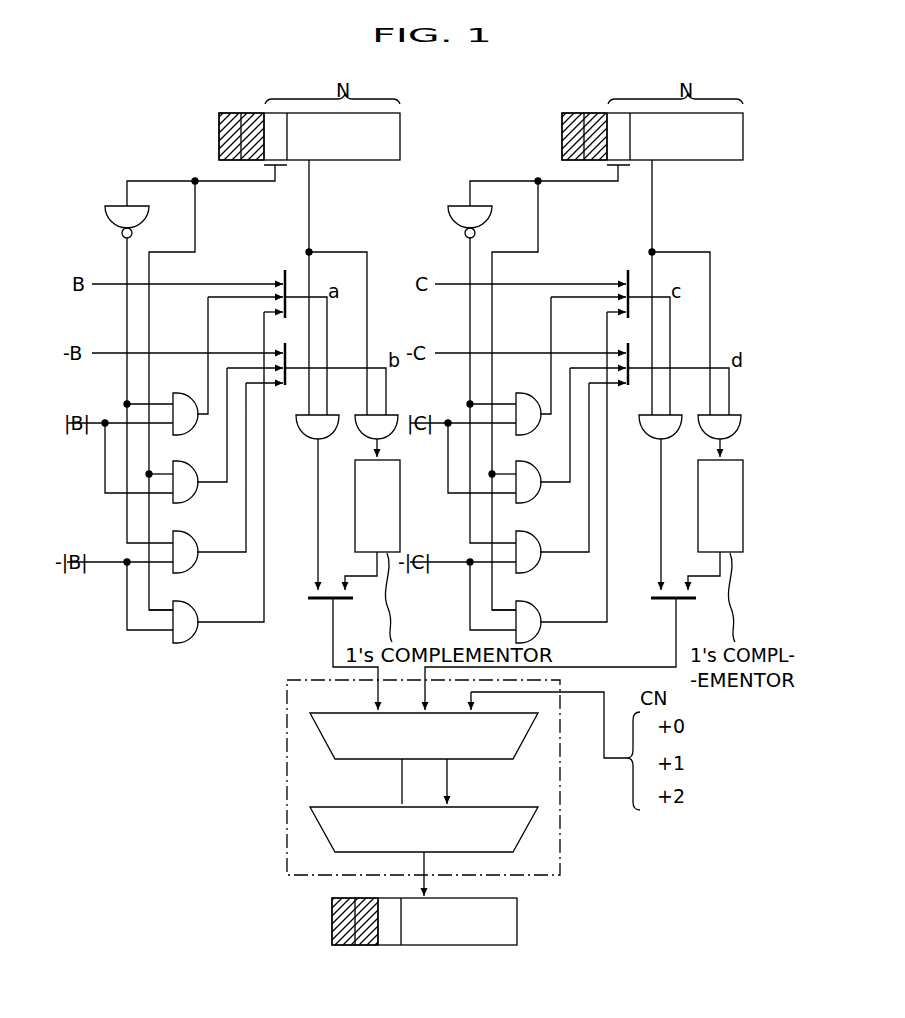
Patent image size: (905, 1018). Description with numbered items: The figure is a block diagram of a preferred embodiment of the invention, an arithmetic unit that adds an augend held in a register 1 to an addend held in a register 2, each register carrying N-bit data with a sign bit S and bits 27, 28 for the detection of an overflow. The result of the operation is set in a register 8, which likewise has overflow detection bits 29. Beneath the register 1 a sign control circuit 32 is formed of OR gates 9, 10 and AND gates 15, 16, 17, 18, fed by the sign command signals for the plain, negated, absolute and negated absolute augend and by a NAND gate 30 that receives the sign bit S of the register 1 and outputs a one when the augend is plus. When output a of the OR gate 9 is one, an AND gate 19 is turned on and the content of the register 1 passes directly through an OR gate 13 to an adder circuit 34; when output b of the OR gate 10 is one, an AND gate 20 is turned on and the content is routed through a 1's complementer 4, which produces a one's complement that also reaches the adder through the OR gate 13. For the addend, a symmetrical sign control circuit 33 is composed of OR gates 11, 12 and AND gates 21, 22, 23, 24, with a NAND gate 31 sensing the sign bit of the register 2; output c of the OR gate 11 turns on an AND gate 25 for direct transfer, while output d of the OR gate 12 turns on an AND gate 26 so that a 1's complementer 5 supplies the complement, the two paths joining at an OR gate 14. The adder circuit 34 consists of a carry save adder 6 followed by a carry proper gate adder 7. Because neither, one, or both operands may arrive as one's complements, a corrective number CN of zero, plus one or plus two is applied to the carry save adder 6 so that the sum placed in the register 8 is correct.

The register 1 is at (400, 131).
The register 2 is at (667, 149).
The 1's complementer 4 is at (400, 501).
The 1's complementer 5 is at (725, 525).
The carry save adder 6 is at (335, 753).
The carry proper gate adder 7 is at (335, 842).
The register 8 is at (518, 914).
The OR gate 9 is at (288, 277).
The OR gate 10 is at (287, 386).
The OR gate 11 is at (552, 332).
The OR gate 12 is at (582, 379).
The OR gate 13 is at (339, 600).
The OR gate 14 is at (568, 654).
The AND gate 15 is at (186, 395).
The AND gate 16 is at (194, 469).
The AND gate 17 is at (194, 539).
The AND gate 18 is at (194, 609).
The AND gate 19 is at (300, 440).
The AND gate 20 is at (359, 440).
The AND gate 21 is at (476, 402).
The AND gate 22 is at (525, 472).
The AND gate 23 is at (484, 542).
The AND gate 24 is at (525, 612).
The AND gate 25 is at (654, 502).
The AND gate 26 is at (711, 439).
The bit for the detection of an overflow 27 is at (239, 114).
The bit for the detection of an overflow 28 is at (581, 124).
The bit for the detection of an overflow 29 is at (328, 900).
The NAND gate 30 is at (150, 216).
The NAND gate 31 is at (482, 222).
The sign control circuit 32 is at (190, 338).
The sign control circuit 33 is at (537, 397).
The adder circuit 34 is at (287, 796).